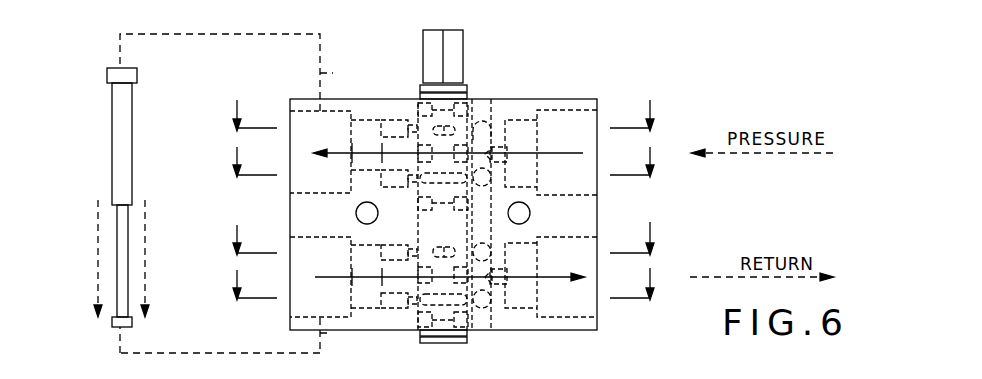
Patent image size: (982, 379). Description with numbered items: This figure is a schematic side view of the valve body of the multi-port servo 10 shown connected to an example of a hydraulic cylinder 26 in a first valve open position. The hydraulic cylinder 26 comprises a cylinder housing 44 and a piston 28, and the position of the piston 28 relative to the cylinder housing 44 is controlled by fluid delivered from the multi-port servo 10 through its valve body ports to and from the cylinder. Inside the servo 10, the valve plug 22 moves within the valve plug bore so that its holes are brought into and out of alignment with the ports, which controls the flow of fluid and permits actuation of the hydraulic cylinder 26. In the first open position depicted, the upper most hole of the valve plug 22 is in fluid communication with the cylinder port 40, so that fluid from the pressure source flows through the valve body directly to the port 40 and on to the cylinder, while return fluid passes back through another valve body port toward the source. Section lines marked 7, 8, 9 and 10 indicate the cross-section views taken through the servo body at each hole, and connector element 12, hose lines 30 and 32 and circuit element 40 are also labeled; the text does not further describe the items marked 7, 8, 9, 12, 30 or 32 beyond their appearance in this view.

The section line 7- 7 is at (443, 113).
The section line 8- 8 is at (443, 160).
The section line 9- 9 is at (444, 237).
The multi-port servo 10 is at (600, 76).
The connector flange 12 is at (482, 82).
The valve plug 22 is at (435, 50).
The hydraulic cylinder 26 is at (100, 58).
The piston 28 is at (104, 334).
The pressure hose 30 is at (333, 73).
The return hose 32 is at (334, 332).
The cylinder port 40 is at (220, 366).
The cylinder housing 44 is at (118, 126).